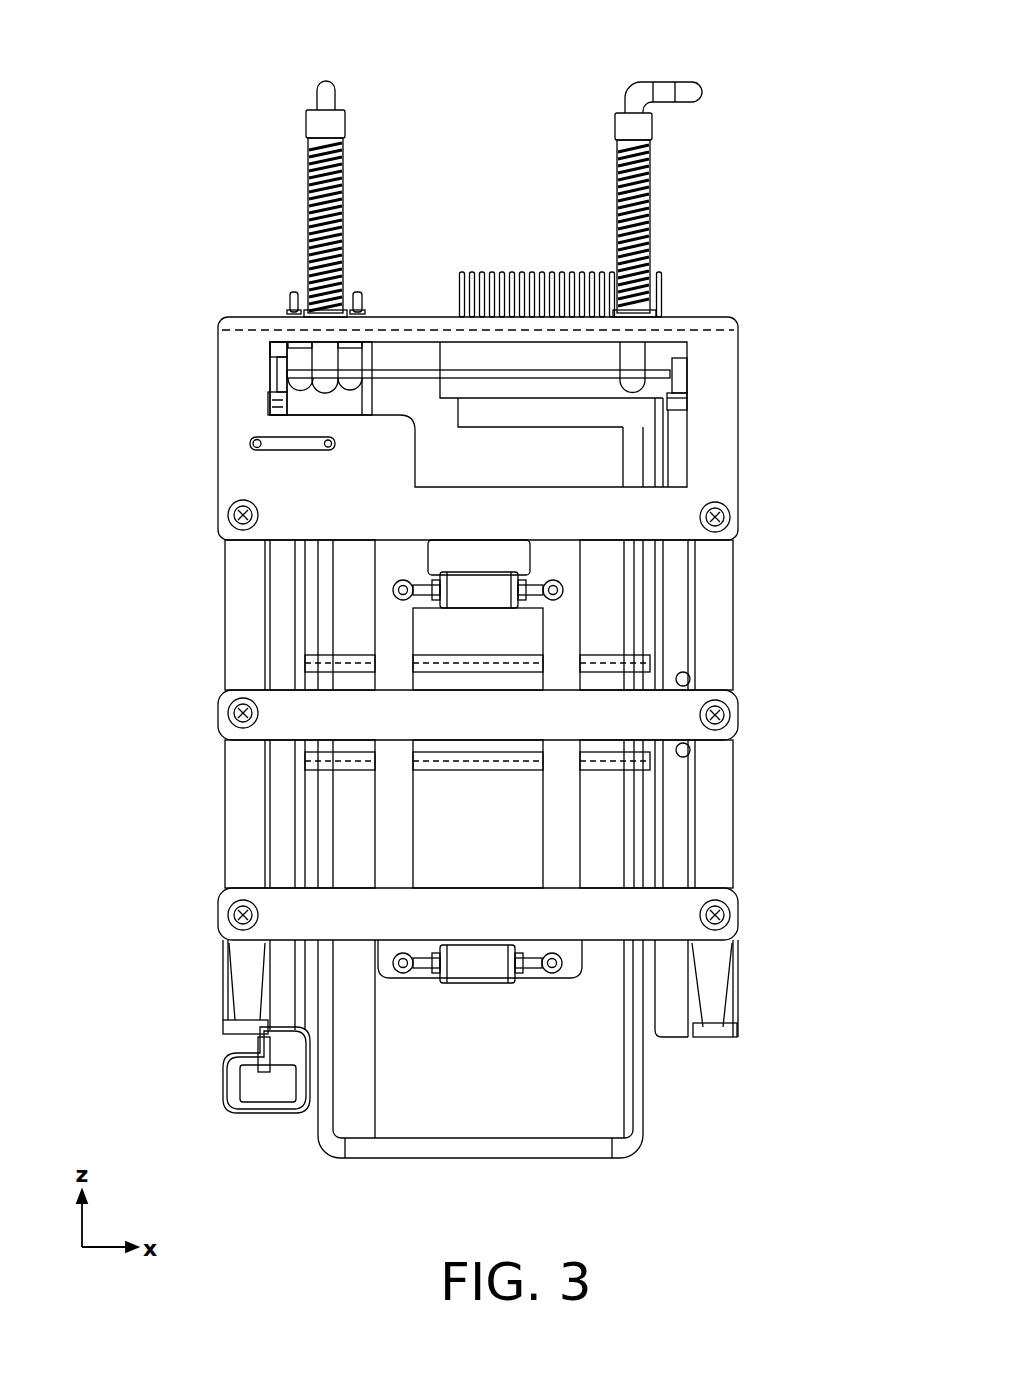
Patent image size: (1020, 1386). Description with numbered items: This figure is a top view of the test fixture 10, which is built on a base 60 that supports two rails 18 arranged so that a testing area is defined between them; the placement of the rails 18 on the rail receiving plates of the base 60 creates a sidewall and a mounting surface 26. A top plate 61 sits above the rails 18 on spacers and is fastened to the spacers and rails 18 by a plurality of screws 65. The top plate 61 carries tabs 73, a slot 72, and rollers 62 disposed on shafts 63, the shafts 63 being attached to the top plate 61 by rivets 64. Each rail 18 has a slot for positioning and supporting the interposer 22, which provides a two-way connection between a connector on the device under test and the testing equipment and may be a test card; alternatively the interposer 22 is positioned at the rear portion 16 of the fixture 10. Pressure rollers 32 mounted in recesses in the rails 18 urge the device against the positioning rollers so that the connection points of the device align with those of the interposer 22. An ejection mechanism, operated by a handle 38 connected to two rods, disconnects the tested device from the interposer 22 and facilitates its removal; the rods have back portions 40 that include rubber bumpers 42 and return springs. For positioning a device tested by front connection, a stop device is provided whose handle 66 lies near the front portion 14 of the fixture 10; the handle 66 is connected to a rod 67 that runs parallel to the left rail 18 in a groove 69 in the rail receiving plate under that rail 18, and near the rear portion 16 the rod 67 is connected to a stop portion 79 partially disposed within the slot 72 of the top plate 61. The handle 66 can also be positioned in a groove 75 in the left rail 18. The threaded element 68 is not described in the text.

The fixture 10 is at (123, 185).
The front portion 14 is at (492, 1168).
The rear portion 16 is at (506, 112).
The rail 18 is at (248, 795).
The interposer 22 is at (500, 372).
The mounting surface 26 is at (285, 957).
The pressure roller 32 is at (690, 672).
The handle 38 is at (492, 1152).
The back portion 40 is at (703, 92).
The rubber bumper 42 is at (633, 363).
The base 60 is at (677, 610).
The top plate 61 is at (240, 695).
The roller 62 is at (465, 603).
The shaft 63 is at (422, 578).
The rivet 64 is at (403, 580).
The screw 65 is at (233, 712).
The handle 66 is at (298, 1108).
The rod 67 is at (343, 310).
The threaded rod 68 is at (343, 217).
The groove 69 is at (344, 128).
The slot 72 is at (686, 380).
The tab 73 is at (280, 377).
The groove 75 is at (235, 1027).
The stop portion 79 is at (328, 450).